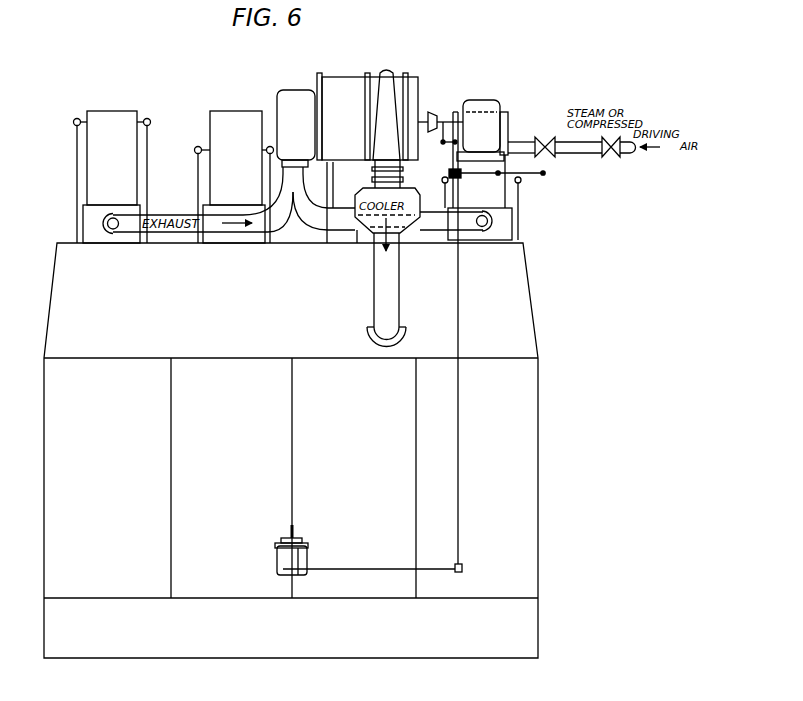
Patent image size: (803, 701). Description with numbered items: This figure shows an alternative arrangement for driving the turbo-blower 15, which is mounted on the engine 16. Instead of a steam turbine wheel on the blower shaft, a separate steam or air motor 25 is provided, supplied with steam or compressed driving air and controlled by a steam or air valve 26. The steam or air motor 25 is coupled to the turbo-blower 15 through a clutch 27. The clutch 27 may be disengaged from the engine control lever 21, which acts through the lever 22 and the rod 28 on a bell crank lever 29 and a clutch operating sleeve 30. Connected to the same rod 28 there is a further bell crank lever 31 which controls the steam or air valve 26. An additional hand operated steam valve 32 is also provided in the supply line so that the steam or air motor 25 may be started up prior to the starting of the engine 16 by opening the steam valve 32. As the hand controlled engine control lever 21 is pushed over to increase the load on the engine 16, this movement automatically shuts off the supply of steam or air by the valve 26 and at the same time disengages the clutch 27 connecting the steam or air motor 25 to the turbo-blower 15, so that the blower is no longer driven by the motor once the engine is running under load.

The turbo-blower 15 is at (338, 88).
The engine 16 is at (537, 480).
The engine control lever 21 is at (305, 557).
The lever 22 is at (462, 572).
The steam or air motor 25 is at (487, 101).
The steam or air valve 26 is at (547, 137).
The clutch 27 is at (433, 108).
The rod 28 is at (460, 498).
The bell crank lever 29 is at (448, 146).
The clutch operating sleeve 30 is at (447, 118).
The bell crank lever 31 is at (532, 175).
The hand operated steam valve 32 is at (608, 155).